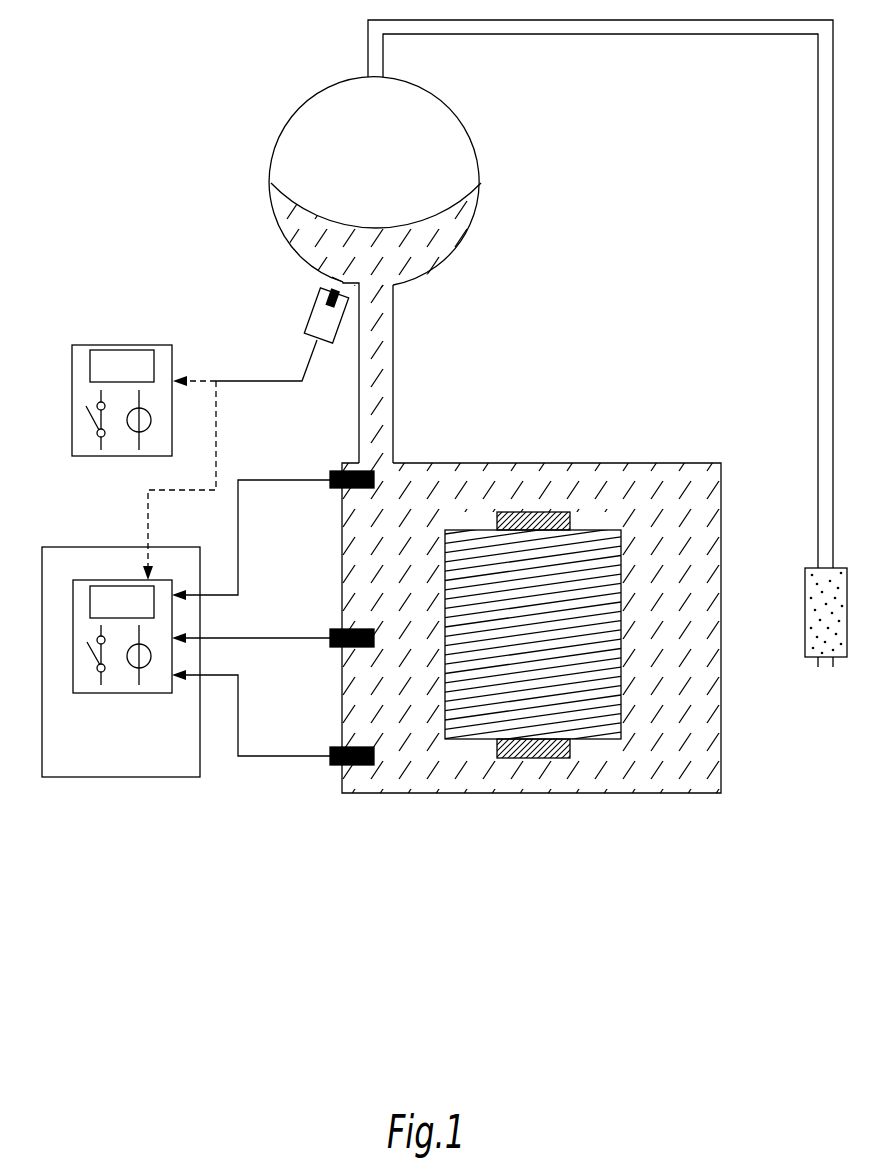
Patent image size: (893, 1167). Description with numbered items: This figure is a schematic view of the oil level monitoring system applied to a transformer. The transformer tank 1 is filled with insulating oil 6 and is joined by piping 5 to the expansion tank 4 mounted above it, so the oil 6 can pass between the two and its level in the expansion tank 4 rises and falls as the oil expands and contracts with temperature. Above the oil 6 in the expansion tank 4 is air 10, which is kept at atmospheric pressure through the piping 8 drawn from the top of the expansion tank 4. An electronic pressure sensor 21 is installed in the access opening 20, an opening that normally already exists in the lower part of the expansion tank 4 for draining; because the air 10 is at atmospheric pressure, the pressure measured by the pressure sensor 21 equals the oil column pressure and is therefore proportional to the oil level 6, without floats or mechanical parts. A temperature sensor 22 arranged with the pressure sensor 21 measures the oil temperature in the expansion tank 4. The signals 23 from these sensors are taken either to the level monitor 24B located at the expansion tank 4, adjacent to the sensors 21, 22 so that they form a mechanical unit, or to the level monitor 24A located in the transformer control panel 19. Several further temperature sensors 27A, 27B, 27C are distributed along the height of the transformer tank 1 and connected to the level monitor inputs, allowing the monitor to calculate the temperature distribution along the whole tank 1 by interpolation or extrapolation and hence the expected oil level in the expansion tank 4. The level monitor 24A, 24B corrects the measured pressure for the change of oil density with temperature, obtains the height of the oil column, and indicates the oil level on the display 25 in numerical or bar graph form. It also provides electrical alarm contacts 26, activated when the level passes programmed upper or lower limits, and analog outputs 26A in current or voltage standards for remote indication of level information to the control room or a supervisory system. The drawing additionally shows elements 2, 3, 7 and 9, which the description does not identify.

The transformer tank 1 is at (710, 464).
The electrodes 2 is at (527, 512).
The core body 3 is at (621, 557).
The expansion tank 4 is at (312, 100).
The piping 5 is at (394, 366).
The oil 6 is at (446, 255).
The liquid surface level 7 is at (423, 217).
The piping 8 is at (818, 247).
The filter 9 is at (812, 594).
The air 10 is at (444, 123).
The transformer control panel 19 is at (68, 777).
The access opening 20 is at (331, 278).
The pressure sensor 21 is at (317, 303).
The temperature sensor 22 is at (318, 314).
The signals 23 is at (278, 382).
The level monitor 24A is at (92, 578).
The level monitor 24B is at (93, 345).
The display 25 is at (90, 600).
The electrical alarm contacts 26 is at (88, 652).
The analog outputs 26A is at (136, 668).
The temperature sensor 27A is at (333, 489).
The temperature sensor 27B is at (333, 648).
The temperature sensor 27C is at (333, 766).